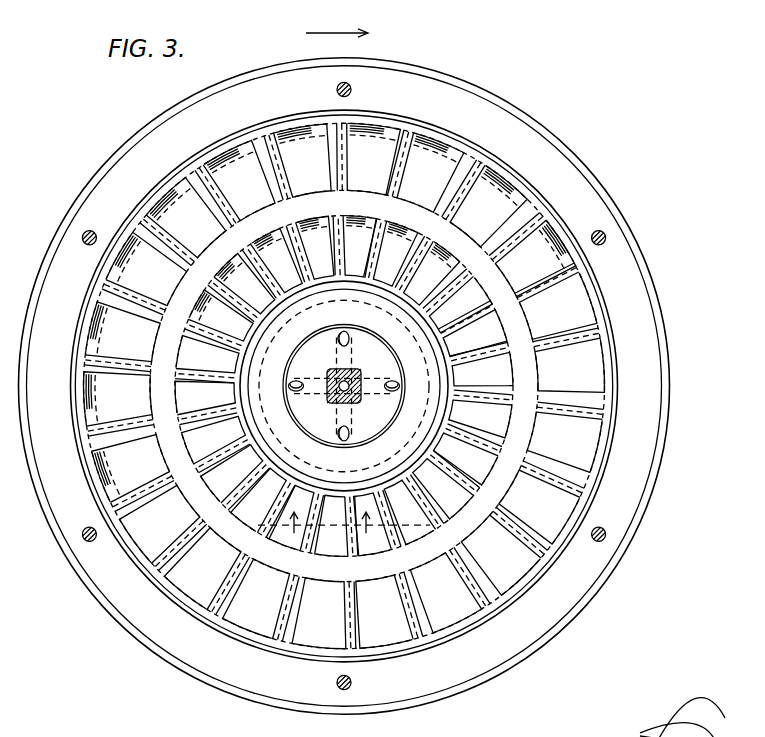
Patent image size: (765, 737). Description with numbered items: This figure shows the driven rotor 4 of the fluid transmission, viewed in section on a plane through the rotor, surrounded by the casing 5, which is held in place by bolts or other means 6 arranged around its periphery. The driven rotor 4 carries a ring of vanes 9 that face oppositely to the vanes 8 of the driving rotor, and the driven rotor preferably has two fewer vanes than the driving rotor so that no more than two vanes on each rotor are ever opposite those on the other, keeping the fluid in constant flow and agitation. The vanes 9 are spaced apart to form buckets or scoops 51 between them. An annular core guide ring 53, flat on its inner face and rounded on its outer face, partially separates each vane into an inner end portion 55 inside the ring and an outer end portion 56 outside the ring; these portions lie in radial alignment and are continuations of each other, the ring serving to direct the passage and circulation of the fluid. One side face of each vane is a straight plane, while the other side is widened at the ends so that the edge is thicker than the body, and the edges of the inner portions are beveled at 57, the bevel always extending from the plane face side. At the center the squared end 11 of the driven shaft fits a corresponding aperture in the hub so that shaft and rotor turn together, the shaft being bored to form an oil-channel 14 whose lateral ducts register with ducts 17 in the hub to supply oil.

The driven rotor 4 is at (581, 320).
The casing 5 is at (585, 173).
The bolts 6 is at (81, 238).
The vanes 8 is at (344, 527).
The vanes 9 is at (462, 155).
The squared end 11 is at (361, 371).
The oil-channel 14 is at (329, 373).
The ducts 17 is at (356, 324).
The buckets or scoops 51 is at (598, 371).
The core guide ring 53 is at (519, 437).
The inner end portion 55 is at (494, 452).
The outer end portion 56 is at (336, 597).
The bevel 57 is at (398, 184).